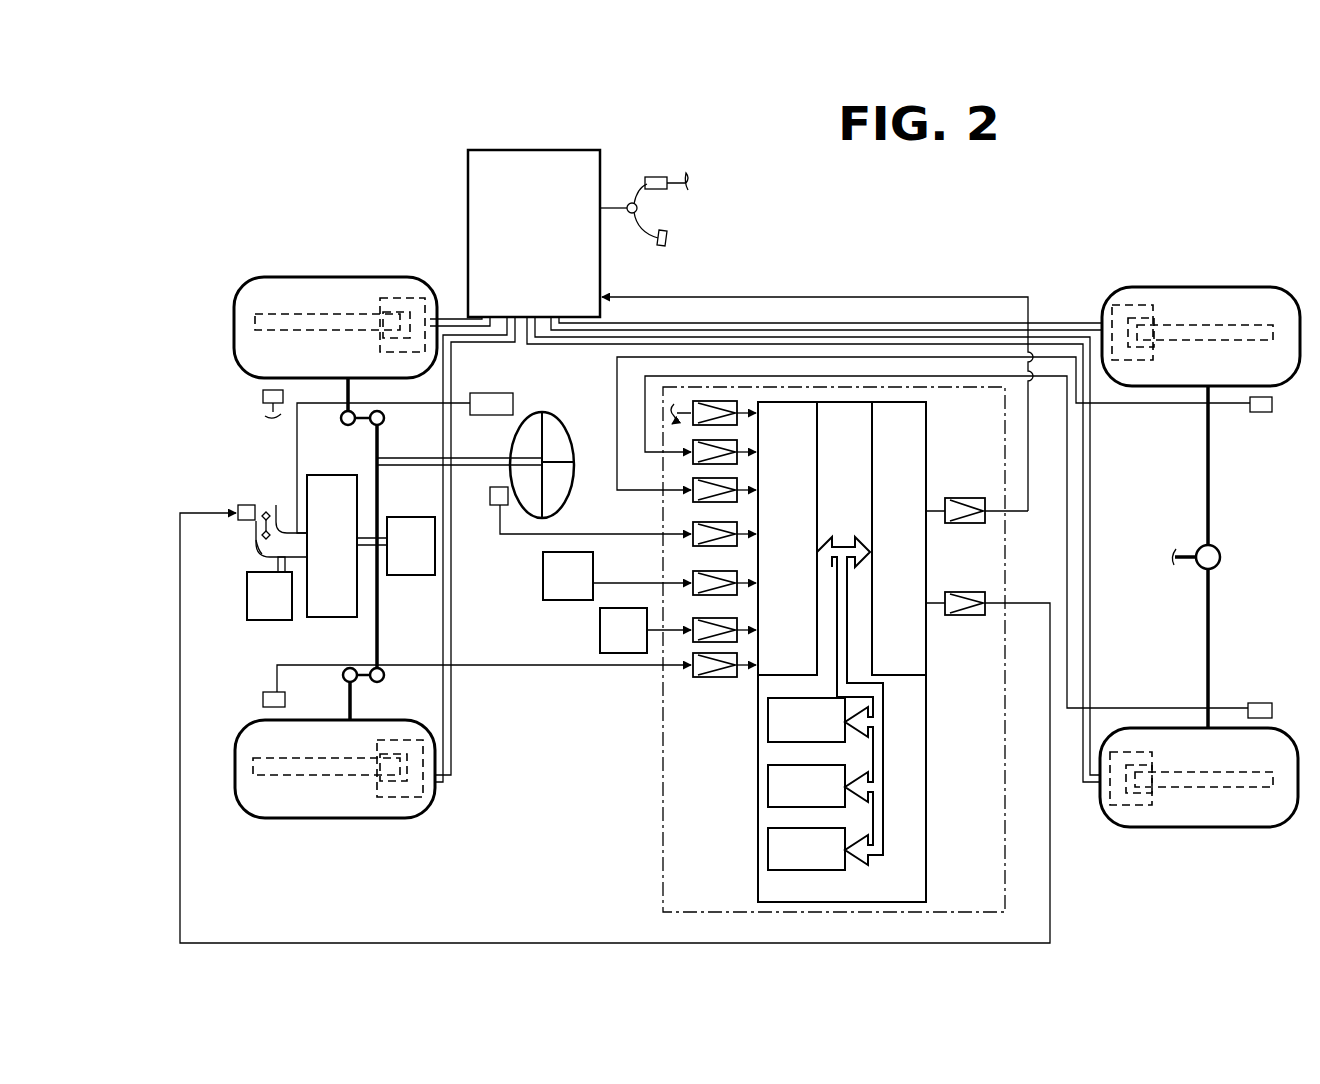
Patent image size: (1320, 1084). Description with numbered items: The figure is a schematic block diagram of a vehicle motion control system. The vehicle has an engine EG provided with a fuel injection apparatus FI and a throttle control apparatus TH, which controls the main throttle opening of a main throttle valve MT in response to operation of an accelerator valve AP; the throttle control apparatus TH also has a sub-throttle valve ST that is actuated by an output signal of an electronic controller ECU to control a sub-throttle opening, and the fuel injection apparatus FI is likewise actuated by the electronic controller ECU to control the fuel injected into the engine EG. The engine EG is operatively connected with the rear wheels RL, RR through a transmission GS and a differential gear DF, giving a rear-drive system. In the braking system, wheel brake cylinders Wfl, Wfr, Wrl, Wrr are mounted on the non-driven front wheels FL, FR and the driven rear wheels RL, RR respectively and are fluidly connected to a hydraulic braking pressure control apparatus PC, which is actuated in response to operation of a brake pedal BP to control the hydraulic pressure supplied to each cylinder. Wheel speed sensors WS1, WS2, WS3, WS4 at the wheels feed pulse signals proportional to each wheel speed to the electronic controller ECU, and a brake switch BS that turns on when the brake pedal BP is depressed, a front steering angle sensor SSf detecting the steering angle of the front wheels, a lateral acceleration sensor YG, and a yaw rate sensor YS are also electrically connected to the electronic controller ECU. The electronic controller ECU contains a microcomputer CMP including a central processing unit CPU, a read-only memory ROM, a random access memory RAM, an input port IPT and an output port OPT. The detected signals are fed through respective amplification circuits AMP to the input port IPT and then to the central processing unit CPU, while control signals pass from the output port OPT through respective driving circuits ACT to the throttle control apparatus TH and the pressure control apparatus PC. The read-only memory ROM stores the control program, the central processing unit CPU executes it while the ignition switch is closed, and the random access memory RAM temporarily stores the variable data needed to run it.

The hydraulic braking pressure control apparatus PC is at (602, 273).
The brake switch BS is at (658, 177).
The brake pedal BP is at (642, 222).
The front right wheel FR is at (264, 277).
The front left wheel FL is at (264, 818).
The rear right wheel RR is at (1225, 287).
The rear left wheel RL is at (1228, 827).
The wheel brake cylinder Wfr is at (406, 298).
The wheel brake cylinder Wfl is at (412, 797).
The wheel brake cylinder Wrr is at (1128, 305).
The wheel brake cylinder Wrl is at (1132, 805).
The wheel speed sensor WS1 is at (265, 695).
The wheel speed sensor WS2 is at (263, 397).
The wheel speed sensor WS3 is at (1262, 703).
The wheel speed sensor WS4 is at (1262, 412).
The differential gear DF is at (1222, 556).
The accelerator valve AP is at (490, 393).
The throttle control apparatus TH is at (262, 498).
The sub-throttle valve ST is at (240, 505).
The main throttle valve MT is at (258, 538).
The engine EG is at (344, 487).
The transmission GS is at (396, 546).
The fuel injection apparatus FI is at (269, 588).
The front steering angle sensor SSf is at (490, 495).
The yaw rate sensor YS is at (617, 576).
The lateral acceleration sensor YG is at (645, 630).
The electronic controller ECU is at (663, 745).
The amplification circuit AMP is at (702, 680).
The microcomputer CMP is at (926, 838).
The input port IPT is at (817, 436).
The output port OPT is at (926, 436).
The central processing unit CPU is at (806, 720).
The read-only memory ROM is at (806, 786).
The random access memory RAM is at (806, 849).
The driving circuit ACT is at (960, 498).